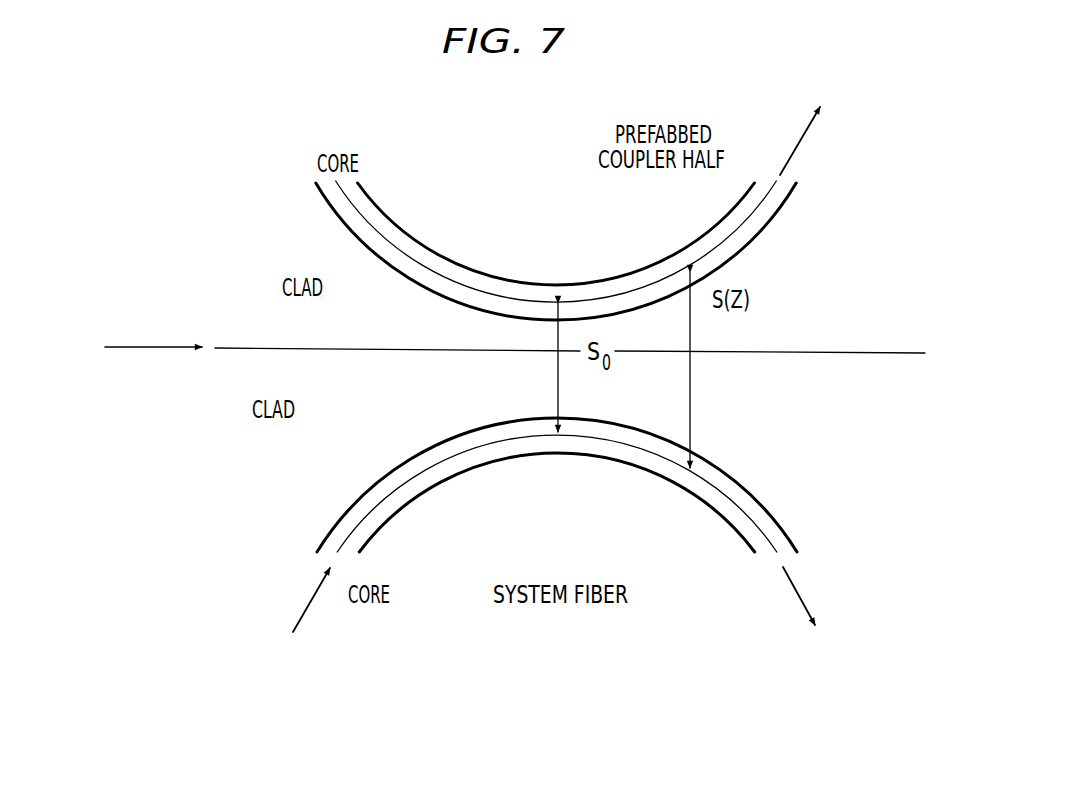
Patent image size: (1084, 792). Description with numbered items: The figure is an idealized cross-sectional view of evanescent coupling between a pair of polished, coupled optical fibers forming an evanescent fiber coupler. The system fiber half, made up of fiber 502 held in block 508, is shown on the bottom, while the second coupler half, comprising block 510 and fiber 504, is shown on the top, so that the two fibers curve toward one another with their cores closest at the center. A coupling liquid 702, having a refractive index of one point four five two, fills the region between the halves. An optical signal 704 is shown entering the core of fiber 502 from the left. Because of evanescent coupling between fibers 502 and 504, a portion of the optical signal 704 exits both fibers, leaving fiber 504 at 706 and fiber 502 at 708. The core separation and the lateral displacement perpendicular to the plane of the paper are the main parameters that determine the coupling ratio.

The fiber 502 is at (557, 465).
The fiber 504 is at (556, 263).
The block 508 is at (852, 430).
The block 510 is at (852, 257).
The coupling liquid 702 is at (140, 334).
The optical signal 704 is at (307, 610).
The exiting signal portion 706 is at (795, 145).
The exiting signal portion 708 is at (795, 588).